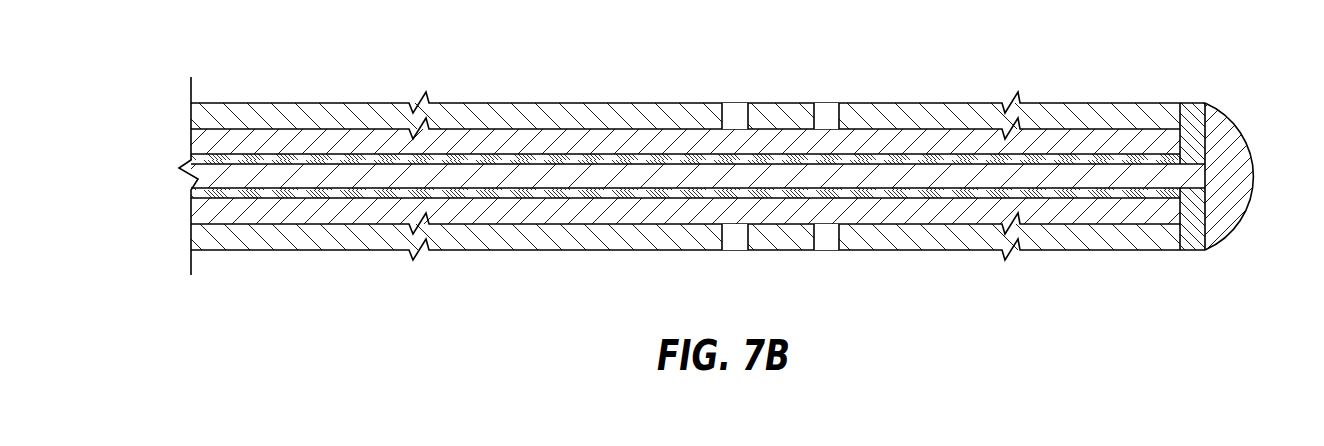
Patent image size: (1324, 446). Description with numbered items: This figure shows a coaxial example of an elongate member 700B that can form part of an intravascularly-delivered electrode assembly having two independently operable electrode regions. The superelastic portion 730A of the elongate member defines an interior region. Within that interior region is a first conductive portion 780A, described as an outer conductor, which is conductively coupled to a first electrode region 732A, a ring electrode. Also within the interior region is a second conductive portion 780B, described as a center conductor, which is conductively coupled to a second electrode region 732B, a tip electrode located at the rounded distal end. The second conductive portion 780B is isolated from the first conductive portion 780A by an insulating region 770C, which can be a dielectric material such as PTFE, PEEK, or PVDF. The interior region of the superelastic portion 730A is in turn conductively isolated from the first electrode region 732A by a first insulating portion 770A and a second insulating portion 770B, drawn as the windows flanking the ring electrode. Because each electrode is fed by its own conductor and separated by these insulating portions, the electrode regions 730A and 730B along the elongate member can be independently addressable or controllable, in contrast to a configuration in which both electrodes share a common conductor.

The multilayer sensor assembly 700B is at (264, 69).
The superelastic portion 730A is at (518, 103).
The electrode region 730B is at (940, 103).
The first electrode region 732A is at (847, 92).
The second electrode region 732B is at (1232, 127).
The first insulating portion 770A is at (737, 246).
The second insulating portion 770B is at (830, 246).
The insulating region 770C is at (1068, 152).
The first conductive portion 780A is at (1088, 172).
The second conductive portion 780B is at (590, 141).